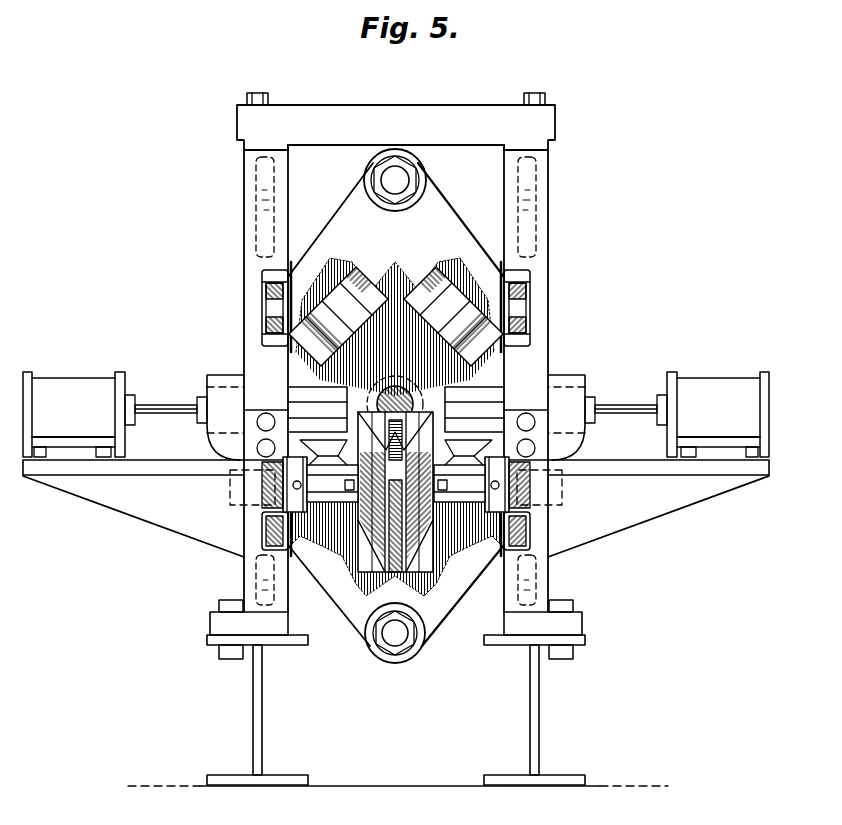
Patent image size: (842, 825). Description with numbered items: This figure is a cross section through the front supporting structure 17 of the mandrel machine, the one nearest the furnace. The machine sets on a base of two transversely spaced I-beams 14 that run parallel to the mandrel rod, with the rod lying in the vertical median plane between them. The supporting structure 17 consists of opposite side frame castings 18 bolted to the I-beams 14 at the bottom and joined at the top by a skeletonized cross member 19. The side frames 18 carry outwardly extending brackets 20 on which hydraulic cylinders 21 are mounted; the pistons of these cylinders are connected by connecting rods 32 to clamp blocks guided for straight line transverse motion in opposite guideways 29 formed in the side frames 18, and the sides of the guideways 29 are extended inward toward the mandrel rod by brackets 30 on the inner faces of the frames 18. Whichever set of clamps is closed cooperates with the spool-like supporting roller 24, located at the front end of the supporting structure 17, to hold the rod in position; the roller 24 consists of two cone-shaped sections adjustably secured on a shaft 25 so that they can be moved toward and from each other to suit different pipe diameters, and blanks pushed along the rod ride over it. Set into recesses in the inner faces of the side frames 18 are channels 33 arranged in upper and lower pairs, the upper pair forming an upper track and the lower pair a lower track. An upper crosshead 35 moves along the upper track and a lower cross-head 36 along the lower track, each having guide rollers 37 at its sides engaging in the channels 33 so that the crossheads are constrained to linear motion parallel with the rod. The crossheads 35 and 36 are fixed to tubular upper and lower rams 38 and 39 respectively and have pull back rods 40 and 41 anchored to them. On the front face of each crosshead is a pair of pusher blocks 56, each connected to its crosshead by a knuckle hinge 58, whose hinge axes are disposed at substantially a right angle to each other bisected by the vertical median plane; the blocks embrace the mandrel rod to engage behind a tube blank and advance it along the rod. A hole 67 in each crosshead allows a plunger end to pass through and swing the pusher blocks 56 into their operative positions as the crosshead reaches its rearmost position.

The I-beams 14 is at (253, 730).
The supporting structure 17 is at (422, 362).
The side frame castings 18 is at (244, 207).
The skeletonized cross members 19 is at (462, 105).
The outwardly extending brackets 20 is at (115, 490).
The hydraulic cylinders 21 is at (70, 382).
The spool-like supporting roller 24 is at (396, 436).
The shaft 25 is at (503, 490).
The guideways 29 is at (210, 433).
The brackets 30 is at (485, 392).
The connecting rods 32 is at (165, 402).
The channels 33 is at (270, 277).
The crosshead 35 is at (455, 189).
The cross-head 36 is at (349, 622).
The guide rollers 37 is at (272, 302).
The tubular upper ram 38 is at (412, 264).
The tubular lower ram 39 is at (368, 577).
The pull back rod 40 is at (392, 185).
The pull back rod 41 is at (393, 642).
The pusher blocks 56 is at (327, 290).
The knuckle hinge 58 is at (418, 302).
The hole 67 is at (288, 323).